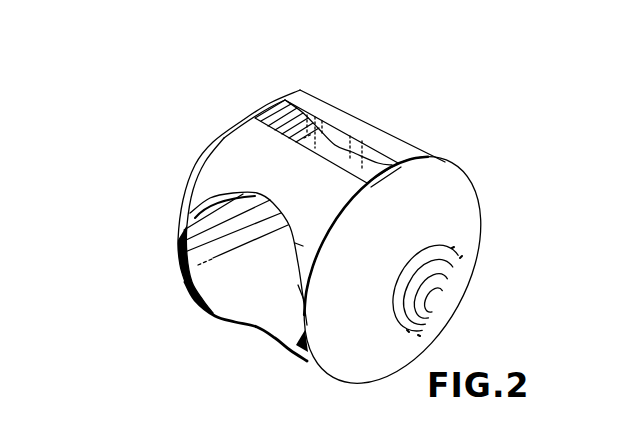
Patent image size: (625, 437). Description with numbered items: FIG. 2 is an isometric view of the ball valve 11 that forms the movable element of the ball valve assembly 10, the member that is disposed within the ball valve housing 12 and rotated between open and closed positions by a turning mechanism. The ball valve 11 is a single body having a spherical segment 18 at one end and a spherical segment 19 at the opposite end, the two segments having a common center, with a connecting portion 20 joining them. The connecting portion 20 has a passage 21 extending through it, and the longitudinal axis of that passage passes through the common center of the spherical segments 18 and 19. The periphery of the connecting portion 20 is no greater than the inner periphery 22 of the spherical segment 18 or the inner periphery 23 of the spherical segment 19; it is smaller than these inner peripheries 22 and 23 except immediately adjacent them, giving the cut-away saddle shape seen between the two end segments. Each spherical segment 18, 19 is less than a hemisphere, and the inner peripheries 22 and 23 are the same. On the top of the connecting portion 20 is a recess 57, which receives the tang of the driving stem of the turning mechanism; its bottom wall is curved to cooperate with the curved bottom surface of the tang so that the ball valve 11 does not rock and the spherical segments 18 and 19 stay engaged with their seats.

The ball valve assembly 10 is at (98, 302).
The ball valve 11 is at (204, 0).
The ball valve housing 12 is at (613, 230).
The spherical segment 18 is at (427, 332).
The spherical segment 19 is at (213, 145).
The connecting portion 20 is at (248, 138).
The passage 21 is at (256, 303).
The inner periphery 22 is at (347, 203).
The inner periphery 23 is at (212, 172).
The recess 57 is at (340, 143).